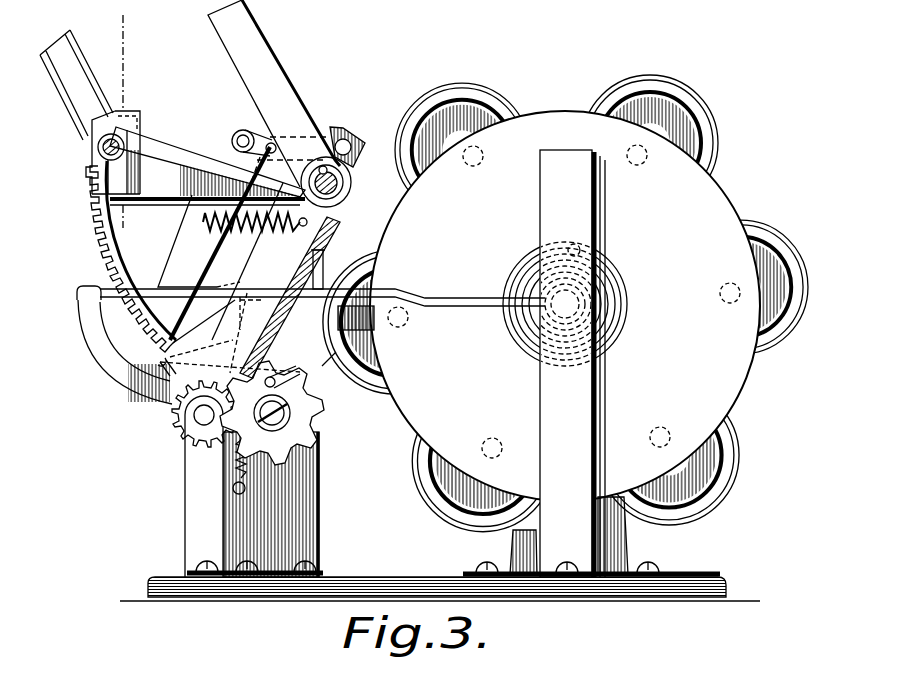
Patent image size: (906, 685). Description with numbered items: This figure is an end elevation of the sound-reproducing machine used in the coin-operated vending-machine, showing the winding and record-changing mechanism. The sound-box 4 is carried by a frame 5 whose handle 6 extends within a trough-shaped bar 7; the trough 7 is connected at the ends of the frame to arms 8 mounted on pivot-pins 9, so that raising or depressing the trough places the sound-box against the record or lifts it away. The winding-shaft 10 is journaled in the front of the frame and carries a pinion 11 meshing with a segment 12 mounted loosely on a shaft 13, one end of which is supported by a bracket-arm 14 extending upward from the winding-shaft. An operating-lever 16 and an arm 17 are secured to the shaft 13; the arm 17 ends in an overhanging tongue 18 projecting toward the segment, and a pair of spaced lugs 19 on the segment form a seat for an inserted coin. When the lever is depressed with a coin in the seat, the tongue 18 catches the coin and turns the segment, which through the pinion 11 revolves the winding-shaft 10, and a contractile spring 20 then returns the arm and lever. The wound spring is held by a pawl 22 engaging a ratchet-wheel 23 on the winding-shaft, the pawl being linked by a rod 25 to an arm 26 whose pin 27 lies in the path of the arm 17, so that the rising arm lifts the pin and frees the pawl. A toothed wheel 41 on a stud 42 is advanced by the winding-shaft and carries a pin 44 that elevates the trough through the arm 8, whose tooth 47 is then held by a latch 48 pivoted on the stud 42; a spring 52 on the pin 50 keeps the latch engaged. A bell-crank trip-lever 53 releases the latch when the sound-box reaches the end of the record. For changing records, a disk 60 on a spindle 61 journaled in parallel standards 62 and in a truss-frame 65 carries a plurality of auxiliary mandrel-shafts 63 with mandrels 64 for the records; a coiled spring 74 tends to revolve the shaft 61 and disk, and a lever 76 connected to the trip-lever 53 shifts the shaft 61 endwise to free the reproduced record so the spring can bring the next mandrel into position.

The sound-box 4 is at (326, 259).
The frame 5 is at (243, 283).
The handle 6 is at (158, 347).
The trough-shaped bar 7 is at (188, 331).
The arms 8 is at (212, 341).
The pivot-pins 9 is at (84, 124).
The winding-shaft 10 is at (203, 423).
The pinion 11 is at (196, 426).
The segment 12 is at (100, 260).
The shaft 13 is at (338, 185).
The bracket-arm 14 is at (356, 138).
The operating-lever 16 is at (225, 42).
The arm 17 is at (178, 141).
The overhanging tongue 18 is at (128, 118).
The lugs 19 is at (90, 186).
The contractile spring 20 is at (187, 241).
The pawl 22 is at (165, 393).
The ratchet-wheel 23 is at (174, 422).
The rod 25 is at (218, 262).
The arm 26 is at (245, 129).
The pin 27 is at (237, 139).
The toothed wheel 41 is at (295, 399).
The stud 42 is at (292, 416).
The pin 44 is at (292, 378).
The projecting tooth 47 is at (336, 352).
The latch 48 is at (348, 317).
The pin 50 is at (233, 490).
The spring 52 is at (238, 470).
The bell-crank trip-lever 53 is at (250, 290).
The disk 60 is at (565, 306).
The spindle 61 is at (585, 300).
The standards 62 is at (590, 392).
The auxiliary mandrel-shafts 63 is at (471, 167).
The mandrels 64 is at (478, 119).
The truss-frame 65 is at (616, 545).
The coiled spring 74 is at (625, 328).
The lever 76 is at (466, 300).